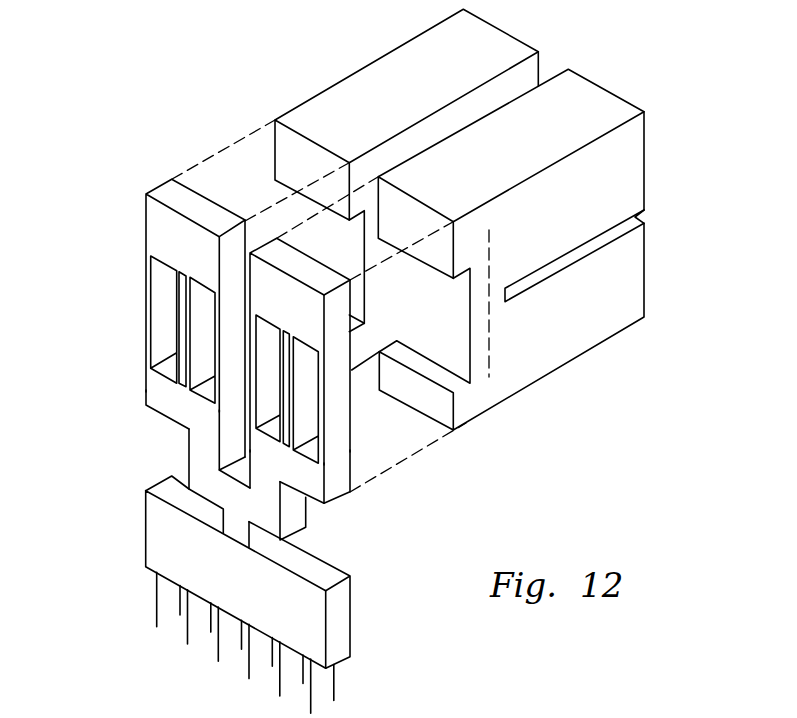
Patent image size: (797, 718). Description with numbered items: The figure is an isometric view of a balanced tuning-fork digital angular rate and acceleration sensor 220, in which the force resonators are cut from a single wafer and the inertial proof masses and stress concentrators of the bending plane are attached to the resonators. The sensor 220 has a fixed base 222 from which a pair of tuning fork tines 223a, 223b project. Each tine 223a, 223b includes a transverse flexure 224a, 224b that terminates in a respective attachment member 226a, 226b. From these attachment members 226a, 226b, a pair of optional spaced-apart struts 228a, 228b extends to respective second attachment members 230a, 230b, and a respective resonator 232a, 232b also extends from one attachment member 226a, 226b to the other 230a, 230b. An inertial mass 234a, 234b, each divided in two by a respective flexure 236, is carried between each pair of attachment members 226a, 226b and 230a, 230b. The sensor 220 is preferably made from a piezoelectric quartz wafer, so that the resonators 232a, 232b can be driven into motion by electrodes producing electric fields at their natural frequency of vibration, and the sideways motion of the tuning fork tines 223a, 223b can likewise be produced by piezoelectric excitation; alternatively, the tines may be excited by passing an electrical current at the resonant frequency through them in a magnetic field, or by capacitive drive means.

The sensor 220 is at (230, 77).
The fixed base 222 is at (310, 630).
The tuning fork tine 223a is at (145, 243).
The tuning fork tine 223b is at (340, 344).
The transverse flexure 224a is at (200, 454).
The transverse flexure 224b is at (292, 515).
The attachment member 226a is at (162, 403).
The attachment member 226b is at (311, 482).
The spaced-apart struts 228a is at (217, 335).
The spaced-apart struts 228b is at (255, 363).
The second attachment member 230a is at (157, 220).
The second attachment member 230b is at (273, 282).
The resonator 232a is at (177, 367).
The resonator 232b is at (293, 413).
The inertial mass 234a is at (500, 48).
The inertial mass 234b is at (605, 108).
The flexure 236 is at (490, 300).